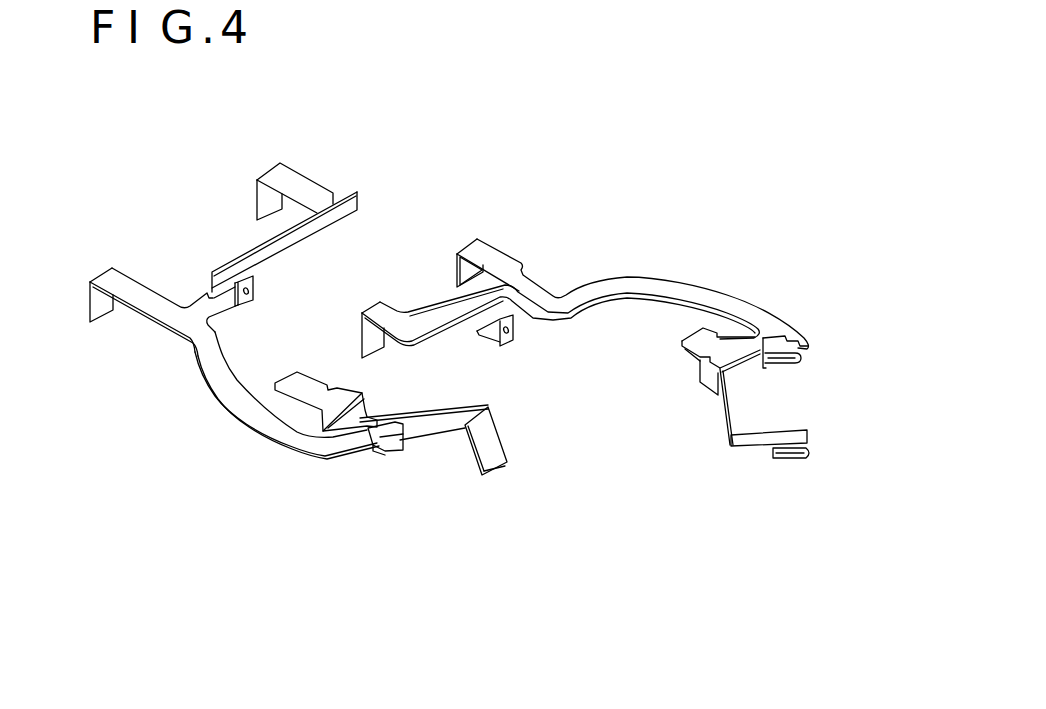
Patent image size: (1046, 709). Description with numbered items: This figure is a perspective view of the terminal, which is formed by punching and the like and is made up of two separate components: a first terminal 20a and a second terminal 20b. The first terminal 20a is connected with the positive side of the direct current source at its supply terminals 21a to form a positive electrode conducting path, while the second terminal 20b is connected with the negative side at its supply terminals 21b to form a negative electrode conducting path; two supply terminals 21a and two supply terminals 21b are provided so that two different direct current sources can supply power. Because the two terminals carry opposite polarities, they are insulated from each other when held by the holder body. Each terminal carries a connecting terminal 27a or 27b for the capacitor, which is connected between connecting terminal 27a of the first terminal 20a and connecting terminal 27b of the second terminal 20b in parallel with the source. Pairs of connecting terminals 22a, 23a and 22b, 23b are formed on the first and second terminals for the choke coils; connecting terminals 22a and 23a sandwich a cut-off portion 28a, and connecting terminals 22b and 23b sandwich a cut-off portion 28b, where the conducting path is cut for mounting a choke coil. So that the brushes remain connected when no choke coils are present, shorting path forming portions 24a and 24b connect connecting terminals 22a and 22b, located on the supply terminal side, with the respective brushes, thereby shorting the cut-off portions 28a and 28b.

The first terminal 20a is at (688, 293).
The second terminal 20b is at (227, 389).
The supply terminal 21a is at (475, 252).
The supply terminal 21b is at (297, 183).
The connecting terminal 22a is at (809, 357).
The connecting terminal 22b is at (393, 453).
The connecting terminal 23a is at (787, 462).
The connecting terminal 23b is at (492, 477).
The shorting path forming portion 24a is at (746, 343).
The shorting path forming portion 24b is at (305, 412).
The connecting terminal 27a is at (513, 337).
The connecting terminal 27b is at (250, 306).
The cut-off portion 28a is at (793, 393).
The cut-off portion 28b is at (433, 460).